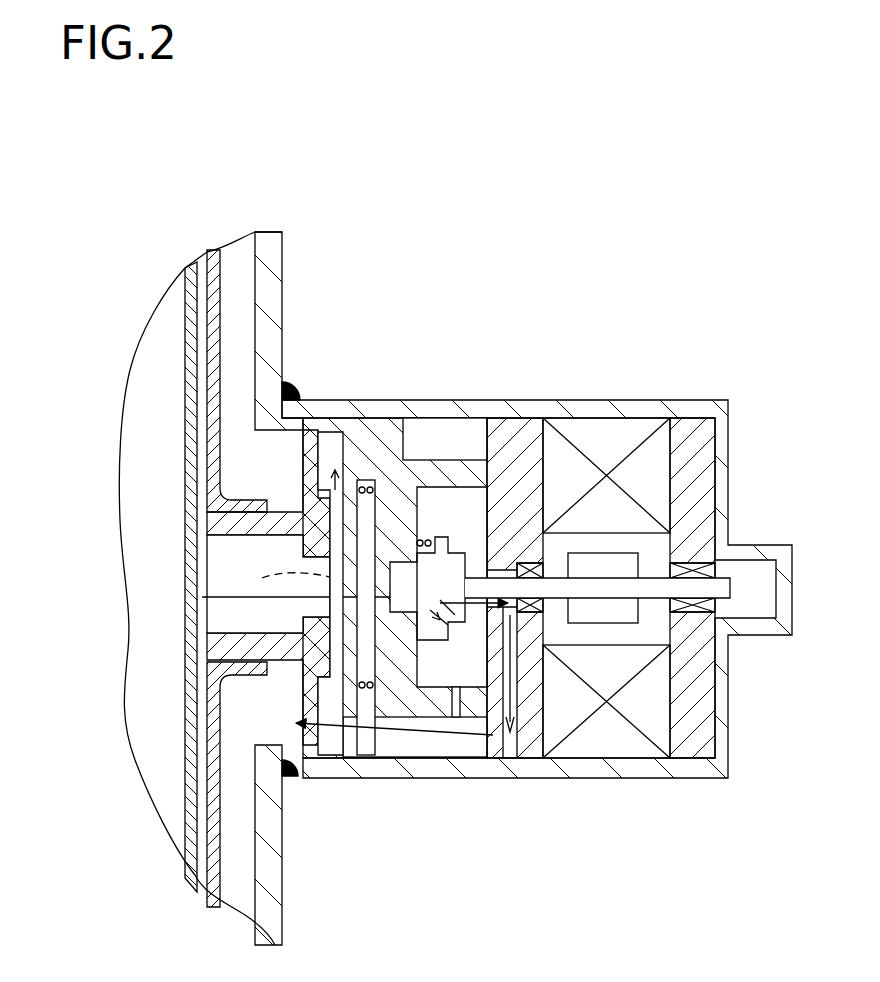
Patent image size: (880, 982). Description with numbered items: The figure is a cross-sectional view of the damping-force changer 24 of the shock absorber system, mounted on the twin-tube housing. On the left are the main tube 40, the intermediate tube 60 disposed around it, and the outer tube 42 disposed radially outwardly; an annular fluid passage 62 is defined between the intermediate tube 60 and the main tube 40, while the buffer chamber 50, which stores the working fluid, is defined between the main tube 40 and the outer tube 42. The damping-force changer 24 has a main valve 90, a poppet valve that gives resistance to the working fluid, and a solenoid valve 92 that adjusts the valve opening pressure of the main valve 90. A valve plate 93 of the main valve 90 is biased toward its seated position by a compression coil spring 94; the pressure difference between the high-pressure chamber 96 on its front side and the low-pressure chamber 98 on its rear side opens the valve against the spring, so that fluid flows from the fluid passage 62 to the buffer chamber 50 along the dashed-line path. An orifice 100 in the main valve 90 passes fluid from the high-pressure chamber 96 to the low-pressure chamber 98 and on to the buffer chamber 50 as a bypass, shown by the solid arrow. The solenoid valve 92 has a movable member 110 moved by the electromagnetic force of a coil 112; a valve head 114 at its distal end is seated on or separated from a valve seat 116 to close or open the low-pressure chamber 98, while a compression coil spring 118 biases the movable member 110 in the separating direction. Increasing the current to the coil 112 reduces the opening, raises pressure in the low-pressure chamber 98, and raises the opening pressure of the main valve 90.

The damping-force changer 24 is at (432, 501).
The main tube 40 is at (190, 303).
The outer tube 42 is at (272, 275).
The buffer chamber 50 is at (243, 330).
The intermediate tube 60 is at (213, 265).
The annular fluid passage 62 is at (200, 337).
The main valve 90 is at (387, 464).
The solenoid valve 92 is at (633, 396).
The valve plate 93 is at (350, 483).
The compression coil spring 94 is at (372, 480).
The high-pressure chamber 96 is at (335, 657).
The low-pressure chamber 98 is at (363, 657).
The orifice 100 is at (342, 588).
The movable member 110 is at (555, 618).
The coil 112 is at (625, 738).
The valve head 114 is at (457, 612).
The valve seat 116 is at (453, 568).
The compression coil spring 118 is at (428, 538).